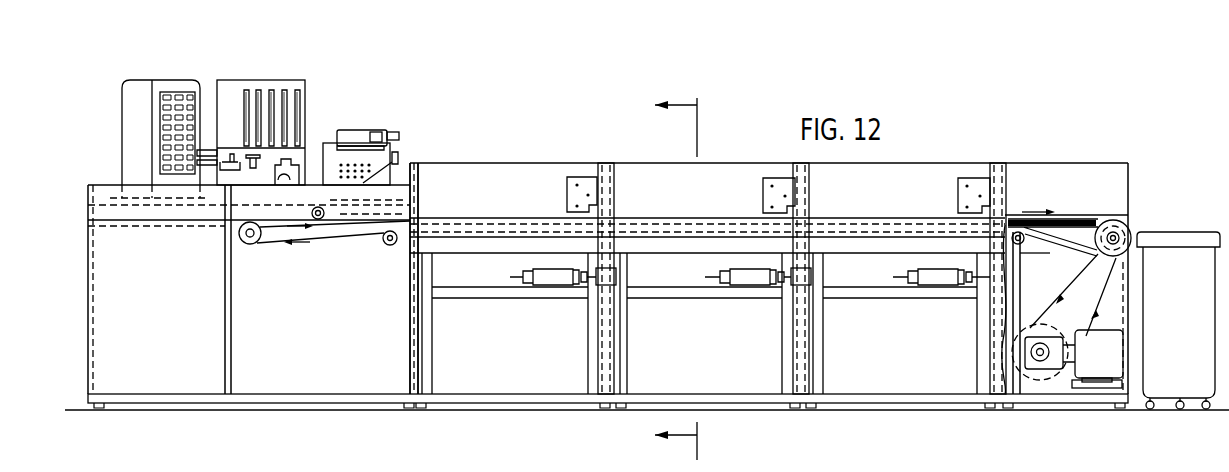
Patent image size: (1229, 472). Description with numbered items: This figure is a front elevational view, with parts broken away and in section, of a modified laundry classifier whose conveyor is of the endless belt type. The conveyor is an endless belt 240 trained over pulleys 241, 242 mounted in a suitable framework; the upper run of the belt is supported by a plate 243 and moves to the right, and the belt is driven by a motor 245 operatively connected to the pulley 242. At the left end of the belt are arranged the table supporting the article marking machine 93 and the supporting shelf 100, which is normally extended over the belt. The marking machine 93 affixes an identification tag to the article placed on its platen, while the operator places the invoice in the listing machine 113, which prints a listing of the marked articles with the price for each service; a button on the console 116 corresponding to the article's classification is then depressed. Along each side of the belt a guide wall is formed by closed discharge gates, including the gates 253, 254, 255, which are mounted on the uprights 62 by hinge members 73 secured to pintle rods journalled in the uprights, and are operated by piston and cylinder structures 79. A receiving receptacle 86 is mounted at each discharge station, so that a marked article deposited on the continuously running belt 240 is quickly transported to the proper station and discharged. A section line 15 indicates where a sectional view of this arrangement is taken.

The console 116 is at (128, 129).
The article marking machine 93 is at (303, 108).
The listing machine 113 is at (346, 136).
The pulley 241 is at (252, 246).
The supporting shelf 100 is at (416, 200).
The discharge gate 255 is at (483, 203).
The discharge gate 254 is at (708, 203).
The discharge gate 253 is at (890, 203).
The upright member 62 is at (607, 165).
The hinge member 73 is at (567, 186).
The piston and cylinder structure 79 is at (545, 287).
The section line 15 is at (662, 277).
The endless belt 240 is at (1030, 225).
The pulley 242 is at (1126, 230).
The plate 243 is at (1057, 244).
The motor 245 is at (1111, 365).
The receiving receptacle 86 is at (1186, 335).